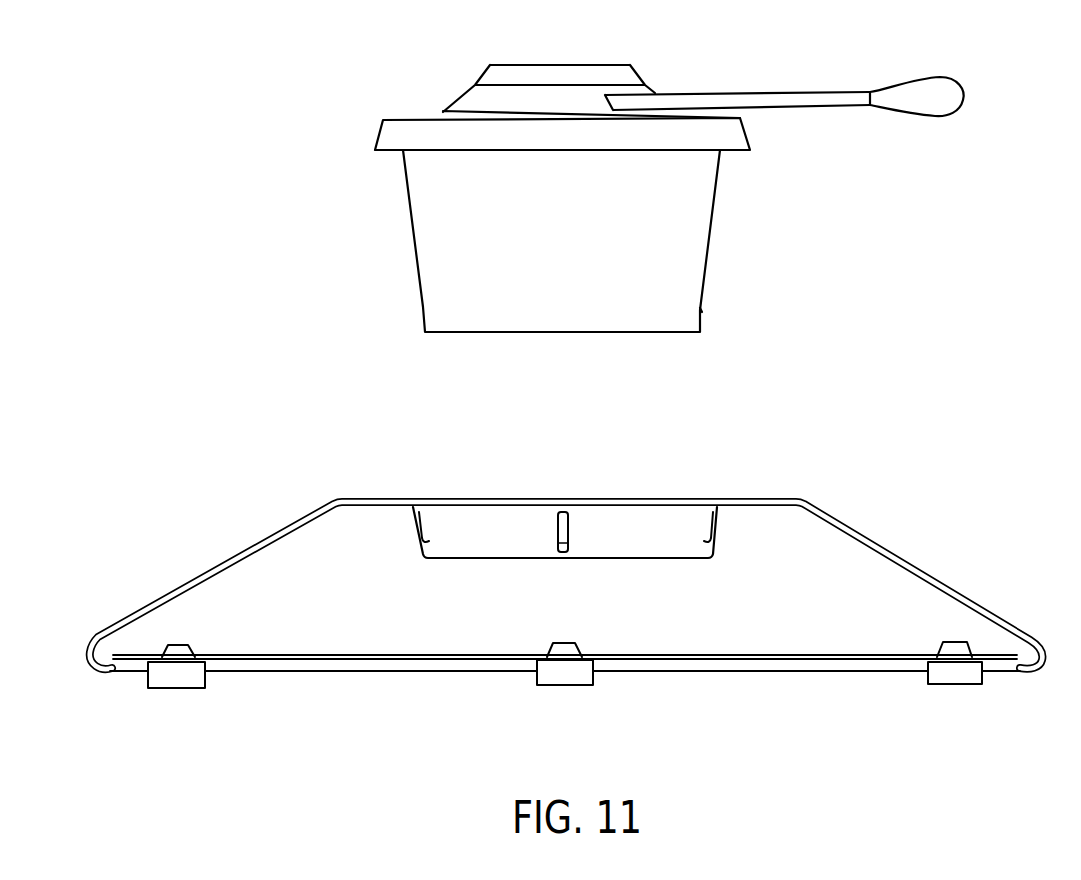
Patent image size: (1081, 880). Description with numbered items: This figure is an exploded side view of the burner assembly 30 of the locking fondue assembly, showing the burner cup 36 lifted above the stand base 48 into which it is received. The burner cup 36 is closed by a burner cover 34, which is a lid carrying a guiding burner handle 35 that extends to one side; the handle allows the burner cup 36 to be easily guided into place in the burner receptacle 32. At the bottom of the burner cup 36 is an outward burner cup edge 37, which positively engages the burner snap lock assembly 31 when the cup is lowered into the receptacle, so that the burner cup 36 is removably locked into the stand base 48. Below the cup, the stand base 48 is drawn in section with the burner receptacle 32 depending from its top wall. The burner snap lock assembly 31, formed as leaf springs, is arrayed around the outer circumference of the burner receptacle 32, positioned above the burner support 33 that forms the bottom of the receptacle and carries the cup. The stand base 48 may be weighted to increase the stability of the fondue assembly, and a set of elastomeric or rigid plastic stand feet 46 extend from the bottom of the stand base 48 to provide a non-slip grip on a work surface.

The burner assembly 30 is at (575, 184).
The burner snap lock assembly 31 is at (571, 528).
The burner receptacle 32 is at (600, 532).
The burner support 33 is at (670, 559).
The burner cover 34 is at (453, 102).
The guiding burner handle 35 is at (792, 93).
The burner cup 36 is at (712, 244).
The outward burner cup edge 37 is at (700, 310).
The stand feet 46 is at (947, 684).
The stand base 48 is at (238, 553).